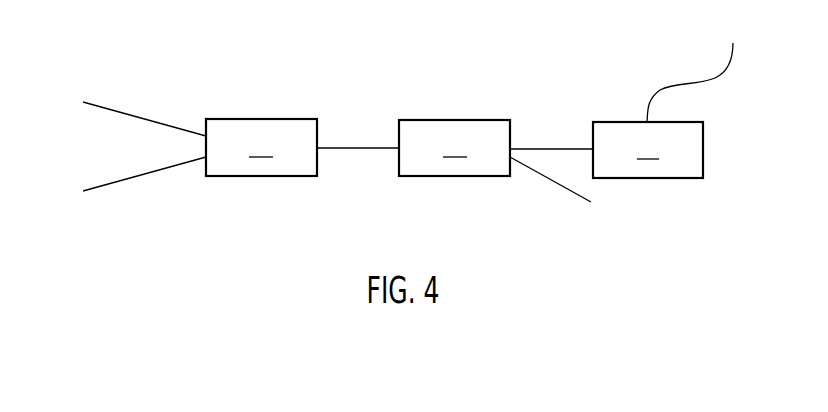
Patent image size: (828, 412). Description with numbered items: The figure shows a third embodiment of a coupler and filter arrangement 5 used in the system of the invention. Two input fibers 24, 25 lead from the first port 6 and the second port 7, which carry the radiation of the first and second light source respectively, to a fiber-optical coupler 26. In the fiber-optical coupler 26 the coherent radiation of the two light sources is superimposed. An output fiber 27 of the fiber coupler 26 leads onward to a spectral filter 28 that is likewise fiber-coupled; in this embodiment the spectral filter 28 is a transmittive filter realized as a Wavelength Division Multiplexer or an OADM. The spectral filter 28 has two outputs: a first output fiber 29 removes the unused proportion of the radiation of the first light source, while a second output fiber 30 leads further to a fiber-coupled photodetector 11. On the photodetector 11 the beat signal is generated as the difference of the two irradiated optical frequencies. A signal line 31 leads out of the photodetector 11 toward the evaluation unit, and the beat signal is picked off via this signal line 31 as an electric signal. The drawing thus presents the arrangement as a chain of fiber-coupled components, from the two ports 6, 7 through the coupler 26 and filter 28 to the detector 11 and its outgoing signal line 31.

The coupler and filter arrangement 5 is at (242, 52).
The first port 6 is at (93, 113).
The second port 7 is at (93, 199).
The photodetector 11 is at (648, 150).
The input fiber 24 is at (141, 117).
The input fiber 25 is at (139, 178).
The fiber-optical coupler 26 is at (261, 147).
The output fiber 27 is at (359, 146).
The spectral filter 28 is at (454, 148).
The first output fiber 29 is at (555, 187).
The second output fiber 30 is at (554, 147).
The signal line 31 is at (674, 81).